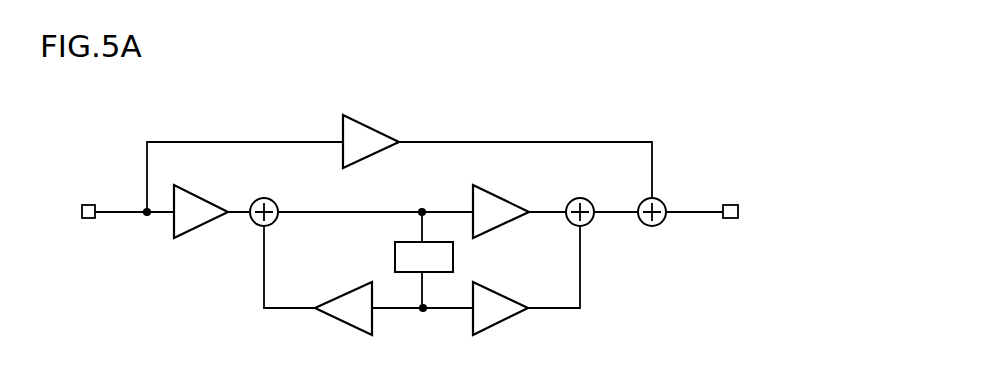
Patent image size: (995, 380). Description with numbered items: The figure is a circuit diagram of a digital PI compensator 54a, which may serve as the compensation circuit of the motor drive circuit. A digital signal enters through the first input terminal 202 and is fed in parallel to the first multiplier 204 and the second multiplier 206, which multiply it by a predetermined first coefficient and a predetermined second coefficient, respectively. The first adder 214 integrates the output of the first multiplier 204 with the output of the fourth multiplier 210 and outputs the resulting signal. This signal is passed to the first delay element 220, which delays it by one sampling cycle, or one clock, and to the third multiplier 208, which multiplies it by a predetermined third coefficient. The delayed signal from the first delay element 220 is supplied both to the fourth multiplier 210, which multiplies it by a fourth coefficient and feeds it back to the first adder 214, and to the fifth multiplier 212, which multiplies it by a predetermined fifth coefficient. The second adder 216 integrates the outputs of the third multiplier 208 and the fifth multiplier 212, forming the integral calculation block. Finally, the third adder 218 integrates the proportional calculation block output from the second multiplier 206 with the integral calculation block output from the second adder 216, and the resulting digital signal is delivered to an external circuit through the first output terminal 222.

The digital PI compensator 54a is at (768, 143).
The first input terminal 202 is at (91, 205).
The first multiplier 204 is at (195, 192).
The second multiplier 206 is at (372, 128).
The third multiplier 208 is at (493, 190).
The fourth multiplier 210 is at (328, 317).
The fifth multiplier 212 is at (513, 317).
The first adder 214 is at (272, 202).
The second adder 216 is at (590, 199).
The third adder 218 is at (662, 198).
The first delay element 220 is at (453, 257).
The first output terminal 222 is at (737, 205).